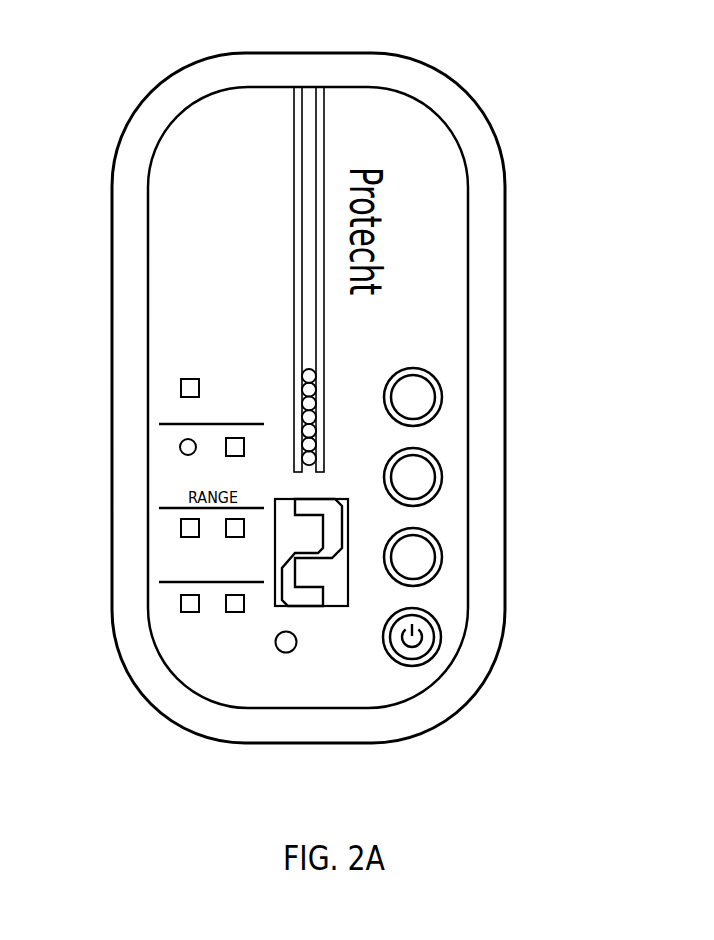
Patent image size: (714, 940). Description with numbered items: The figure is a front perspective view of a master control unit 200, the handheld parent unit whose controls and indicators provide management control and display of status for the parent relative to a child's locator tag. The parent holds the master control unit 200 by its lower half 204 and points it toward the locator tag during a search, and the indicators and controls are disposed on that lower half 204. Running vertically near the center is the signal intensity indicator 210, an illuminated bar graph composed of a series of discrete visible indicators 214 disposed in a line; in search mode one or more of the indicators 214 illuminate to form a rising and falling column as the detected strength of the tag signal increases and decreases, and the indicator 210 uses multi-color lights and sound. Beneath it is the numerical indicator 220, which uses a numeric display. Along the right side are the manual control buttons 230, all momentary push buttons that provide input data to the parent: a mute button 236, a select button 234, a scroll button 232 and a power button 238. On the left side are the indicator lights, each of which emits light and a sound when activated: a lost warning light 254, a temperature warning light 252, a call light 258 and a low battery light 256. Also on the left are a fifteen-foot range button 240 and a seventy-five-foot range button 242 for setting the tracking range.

The master control unit 200 is at (143, 80).
The lower half 204 is at (126, 687).
The signal intensity indicator 210 is at (323, 316).
The discrete visible indicators 214 is at (309, 417).
The numerical indicator 220 is at (345, 603).
The manual control buttons 230 is at (492, 526).
The scroll button 232 is at (442, 565).
The select button 234 is at (442, 480).
The mute button 236 is at (442, 395).
The power button 238 is at (442, 647).
The 15' range button 240 is at (180, 447).
The 75' range button 242 is at (227, 438).
The temperature warning light 252 is at (181, 528).
The lost warning light 254 is at (182, 380).
The low battery light 256 is at (276, 648).
The call light 258 is at (181, 598).